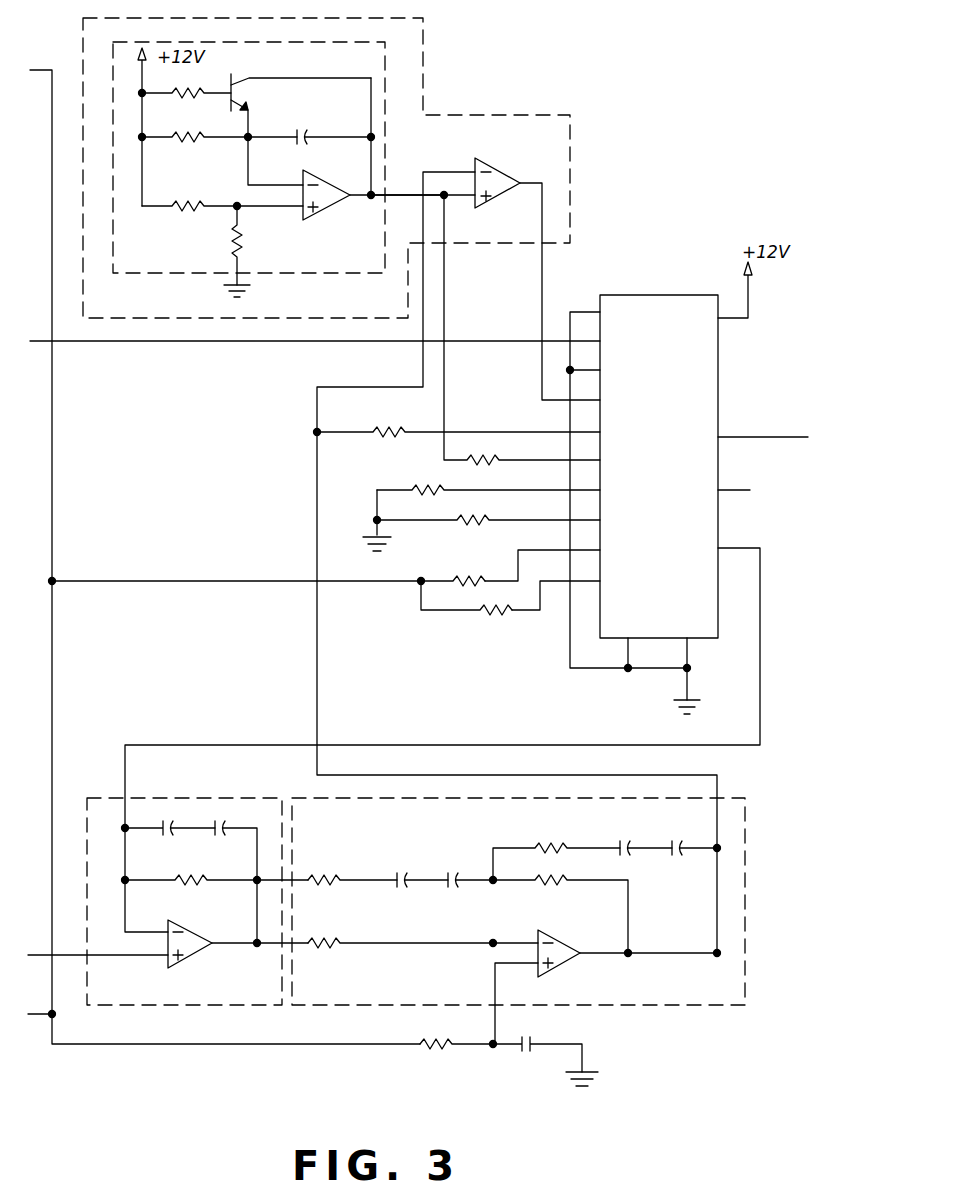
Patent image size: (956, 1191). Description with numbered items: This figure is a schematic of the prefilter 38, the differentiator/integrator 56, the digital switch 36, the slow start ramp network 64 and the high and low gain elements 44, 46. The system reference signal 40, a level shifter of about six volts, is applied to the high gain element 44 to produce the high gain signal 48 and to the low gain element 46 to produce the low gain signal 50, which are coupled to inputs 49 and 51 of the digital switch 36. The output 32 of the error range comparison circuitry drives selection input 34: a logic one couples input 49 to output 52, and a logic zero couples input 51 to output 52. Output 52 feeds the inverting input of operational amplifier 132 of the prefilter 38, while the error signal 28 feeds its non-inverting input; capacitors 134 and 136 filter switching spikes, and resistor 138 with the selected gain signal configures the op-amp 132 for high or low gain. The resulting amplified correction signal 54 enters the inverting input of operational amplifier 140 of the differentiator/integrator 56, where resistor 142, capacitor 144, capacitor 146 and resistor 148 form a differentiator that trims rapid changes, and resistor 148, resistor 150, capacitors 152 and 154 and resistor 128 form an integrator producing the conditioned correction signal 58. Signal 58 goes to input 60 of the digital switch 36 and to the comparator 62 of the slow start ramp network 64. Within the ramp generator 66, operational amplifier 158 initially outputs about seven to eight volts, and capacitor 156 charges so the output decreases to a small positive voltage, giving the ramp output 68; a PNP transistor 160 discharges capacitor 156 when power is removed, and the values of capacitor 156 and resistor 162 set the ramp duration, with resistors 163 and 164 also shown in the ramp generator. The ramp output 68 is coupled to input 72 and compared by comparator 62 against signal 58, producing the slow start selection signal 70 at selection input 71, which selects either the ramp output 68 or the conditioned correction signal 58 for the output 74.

The error signal 28 is at (118, 957).
The output of the error range comparison circuitry 32 is at (487, 341).
The selection input of the digital switch 34 is at (600, 338).
The digital switch 36 is at (690, 376).
The prefilter 38 is at (97, 797).
The system reference signal 40 is at (44, 69).
The high gain element 44 is at (481, 612).
The low gain element 46 is at (453, 575).
The high gain signal 48 is at (531, 612).
The input of the digital switch 49 is at (600, 581).
The low gain signal 50 is at (518, 564).
The input of the digital switch 51 is at (600, 550).
The output of the digital switch 52 is at (718, 548).
The amplified correction signal 54 is at (228, 945).
The differentiator/integrator 56 is at (690, 1005).
The conditioned correction signal 58 is at (448, 172).
The input of the digital switch 60 is at (600, 432).
The comparator 62 is at (500, 178).
The slow start ramp network 64 is at (557, 115).
The ramp generator 66 is at (163, 280).
The ramp output 68 is at (402, 192).
The slow start selection signal 70 is at (542, 231).
The selection input of the digital switch 71 is at (600, 397).
The input of the digital switch 72 is at (600, 460).
The output of the digital switch 74 is at (718, 437).
The resistor 128 is at (558, 884).
The operational amplifier 132 is at (202, 935).
The capacitor 134 is at (162, 824).
The capacitor 136 is at (223, 824).
The resistor 138 is at (191, 875).
The operational amplifier 140 is at (565, 960).
The resistor 142 is at (322, 873).
The capacitor 144 is at (405, 870).
The capacitor 146 is at (447, 887).
The resistor 148 is at (320, 948).
The resistor 150 is at (540, 845).
The capacitor 152 is at (618, 842).
The capacitor 154 is at (672, 842).
The capacitor 156 is at (306, 132).
The operational amplifier 158 is at (332, 209).
The PNP transistor 160 is at (250, 76).
The resistor 162 is at (184, 142).
The resistor 163 is at (245, 234).
The resistor 164 is at (181, 210).